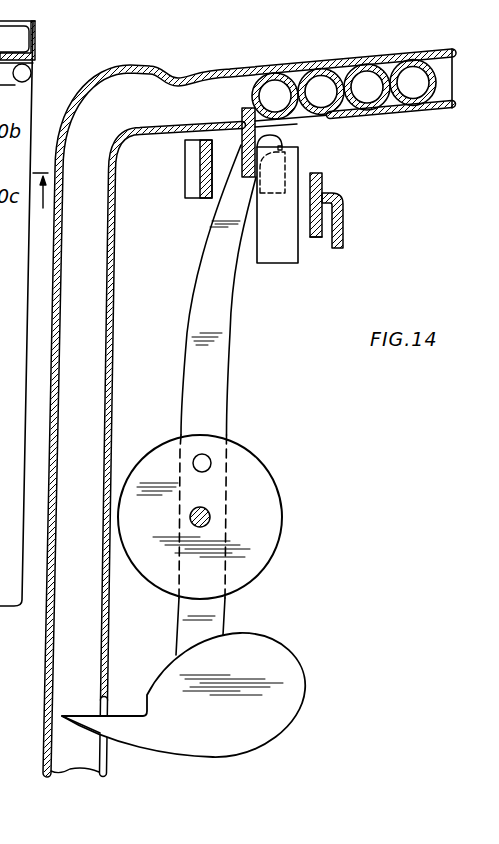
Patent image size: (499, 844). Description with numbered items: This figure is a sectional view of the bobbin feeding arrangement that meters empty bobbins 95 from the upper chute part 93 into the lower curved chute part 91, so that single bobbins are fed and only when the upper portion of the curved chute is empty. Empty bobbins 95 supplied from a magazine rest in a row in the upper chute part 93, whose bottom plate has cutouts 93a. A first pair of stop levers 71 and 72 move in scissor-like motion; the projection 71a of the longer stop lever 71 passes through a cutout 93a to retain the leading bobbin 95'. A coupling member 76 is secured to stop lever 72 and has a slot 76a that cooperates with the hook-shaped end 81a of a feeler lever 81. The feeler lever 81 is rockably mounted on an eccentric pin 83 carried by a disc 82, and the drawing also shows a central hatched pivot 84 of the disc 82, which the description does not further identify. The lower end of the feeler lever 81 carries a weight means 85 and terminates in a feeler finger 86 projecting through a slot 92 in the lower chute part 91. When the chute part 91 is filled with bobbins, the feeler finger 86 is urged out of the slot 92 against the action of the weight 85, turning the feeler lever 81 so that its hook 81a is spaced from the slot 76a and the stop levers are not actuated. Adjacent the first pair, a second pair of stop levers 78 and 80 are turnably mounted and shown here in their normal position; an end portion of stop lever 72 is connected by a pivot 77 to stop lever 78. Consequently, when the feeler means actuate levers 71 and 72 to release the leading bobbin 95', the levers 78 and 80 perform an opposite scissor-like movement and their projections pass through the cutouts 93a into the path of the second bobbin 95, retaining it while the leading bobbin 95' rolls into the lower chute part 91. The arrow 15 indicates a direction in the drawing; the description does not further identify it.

The direction of movement 15 is at (45, 204).
The projection 71a is at (18, 30).
The pivot 77 is at (16, 89).
The stop lever 71 is at (208, 198).
The stop lever 72 is at (243, 146).
The coupling member 76 is at (256, 263).
The slot 76a is at (293, 180).
The stop lever 78 is at (343, 223).
The stop lever 80 is at (314, 238).
The feeler lever 81 is at (228, 408).
The hook-shaped end 81a is at (284, 142).
The disc 82 is at (283, 514).
The eccentric pin 83 is at (211, 462).
The pivot 84 is at (205, 508).
The weight means 85 is at (298, 665).
The feeler finger 86 is at (124, 740).
The lower curved chute part 91 is at (43, 652).
The slot 92 is at (107, 708).
The upper chute part 93 is at (407, 115).
The cutouts 93a is at (217, 126).
The empty bobbins 95 is at (367, 72).
The leading bobbin 95' is at (275, 75).